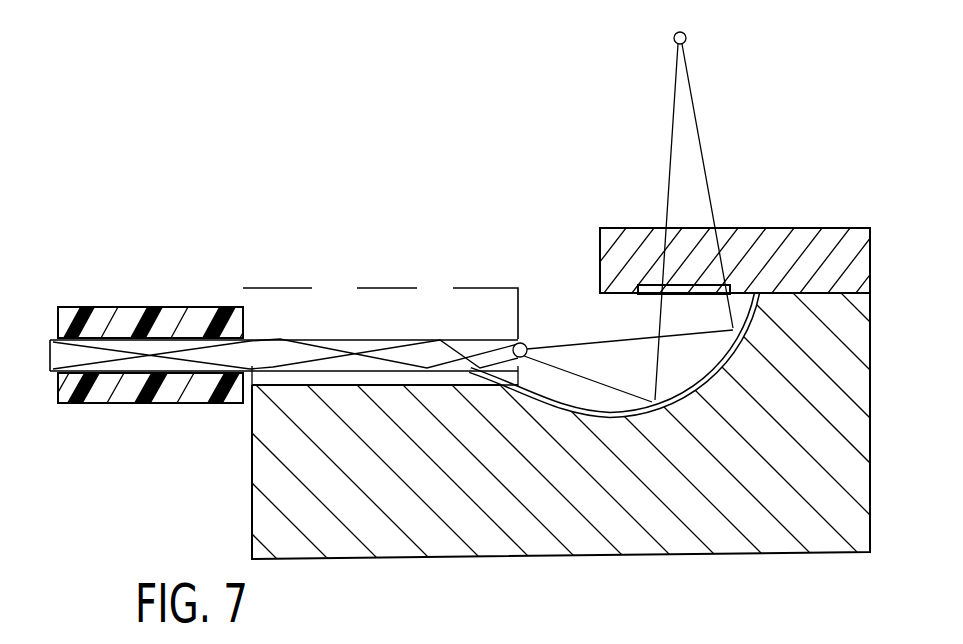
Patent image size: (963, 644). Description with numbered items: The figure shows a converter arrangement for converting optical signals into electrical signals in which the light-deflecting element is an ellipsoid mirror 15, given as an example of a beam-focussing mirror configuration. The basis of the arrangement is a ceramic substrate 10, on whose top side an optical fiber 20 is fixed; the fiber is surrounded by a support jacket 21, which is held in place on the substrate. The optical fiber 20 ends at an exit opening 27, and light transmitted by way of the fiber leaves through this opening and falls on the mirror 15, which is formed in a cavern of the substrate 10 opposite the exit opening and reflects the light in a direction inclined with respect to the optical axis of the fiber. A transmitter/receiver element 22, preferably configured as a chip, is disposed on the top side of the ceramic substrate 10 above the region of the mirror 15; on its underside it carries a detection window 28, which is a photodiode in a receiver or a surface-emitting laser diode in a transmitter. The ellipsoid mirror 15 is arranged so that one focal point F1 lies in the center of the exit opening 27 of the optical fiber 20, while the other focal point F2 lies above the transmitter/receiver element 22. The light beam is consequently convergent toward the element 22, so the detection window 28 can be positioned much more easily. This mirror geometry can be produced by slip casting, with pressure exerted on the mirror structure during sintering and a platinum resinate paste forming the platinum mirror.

The ceramic substrate 10 is at (840, 488).
The ellipsoid mirror 15 is at (743, 347).
The optical fiber 20 is at (54, 358).
The support jacket 21 is at (136, 386).
The transmitter/receiver element 22 is at (820, 248).
The exit opening 27 is at (525, 340).
The detection window 28 is at (650, 290).
The focal point F1 is at (528, 344).
The focal point F2 is at (686, 38).